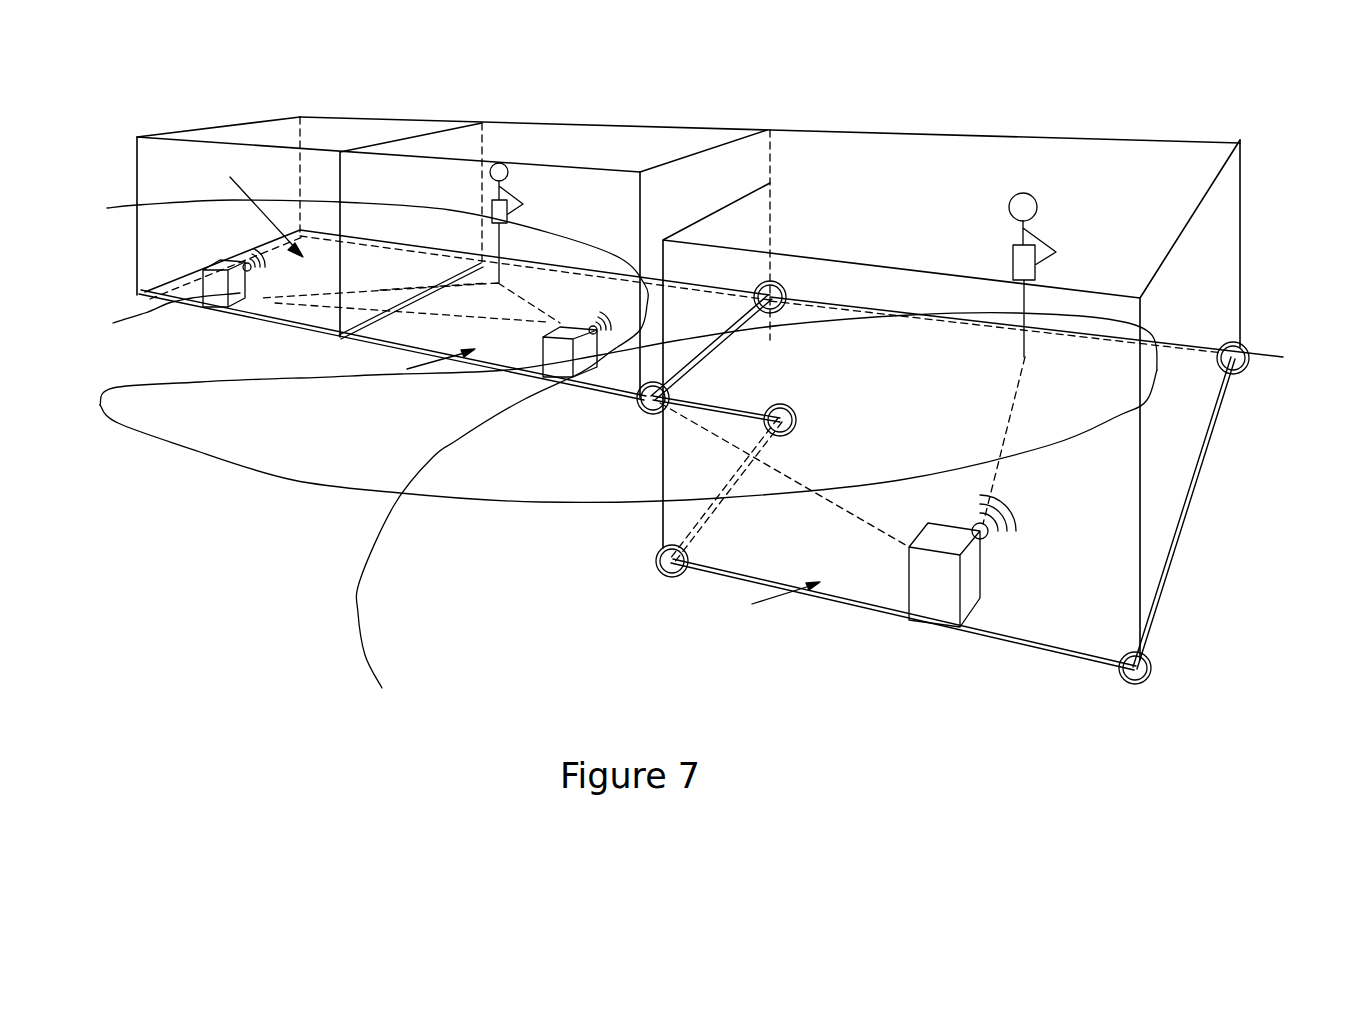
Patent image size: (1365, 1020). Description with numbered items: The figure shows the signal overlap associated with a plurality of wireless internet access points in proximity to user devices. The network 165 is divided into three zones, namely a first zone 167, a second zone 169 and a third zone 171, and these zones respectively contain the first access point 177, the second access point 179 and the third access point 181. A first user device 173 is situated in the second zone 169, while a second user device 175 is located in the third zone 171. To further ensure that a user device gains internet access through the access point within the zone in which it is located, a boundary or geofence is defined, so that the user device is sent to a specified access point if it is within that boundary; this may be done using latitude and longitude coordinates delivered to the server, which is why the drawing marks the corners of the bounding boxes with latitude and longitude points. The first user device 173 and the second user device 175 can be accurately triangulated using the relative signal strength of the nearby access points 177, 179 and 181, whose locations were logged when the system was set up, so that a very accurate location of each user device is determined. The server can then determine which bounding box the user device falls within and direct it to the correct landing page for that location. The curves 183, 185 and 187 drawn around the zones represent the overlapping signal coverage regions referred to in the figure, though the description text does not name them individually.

The network 165 is at (1283, 282).
The zone 1 167 is at (440, 118).
The zone 2 169 is at (685, 122).
The zone 3 171 is at (1053, 133).
The UD1 173 is at (513, 195).
The UD2 175 is at (1050, 250).
The AP1 177 is at (151, 324).
The AP2 179 is at (553, 367).
The AP3 181 is at (945, 612).
The coverage area boundary 183 is at (113, 390).
The coverage area boundary 185 is at (300, 482).
The coverage area boundary 187 is at (380, 688).